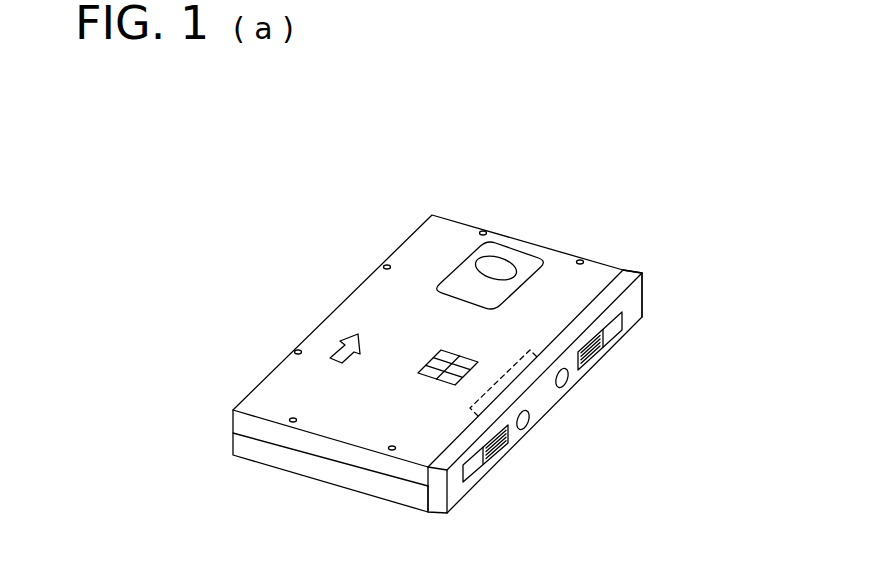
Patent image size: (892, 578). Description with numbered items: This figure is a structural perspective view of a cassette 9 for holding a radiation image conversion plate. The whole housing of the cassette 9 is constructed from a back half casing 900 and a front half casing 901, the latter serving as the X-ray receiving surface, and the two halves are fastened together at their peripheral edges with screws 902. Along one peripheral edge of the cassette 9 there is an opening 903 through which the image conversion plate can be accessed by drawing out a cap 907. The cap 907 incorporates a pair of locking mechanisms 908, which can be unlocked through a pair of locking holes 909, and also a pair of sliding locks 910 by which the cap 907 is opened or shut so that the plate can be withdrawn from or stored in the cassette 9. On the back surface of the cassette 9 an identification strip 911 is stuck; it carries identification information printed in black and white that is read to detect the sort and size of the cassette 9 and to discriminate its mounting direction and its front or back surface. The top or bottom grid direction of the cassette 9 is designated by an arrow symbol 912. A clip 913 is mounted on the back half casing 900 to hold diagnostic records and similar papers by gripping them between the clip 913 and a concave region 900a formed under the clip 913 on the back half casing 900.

The cassette 9 is at (248, 176).
The back half casing 900 is at (405, 257).
The concave region 900a is at (472, 262).
The front half casing 901 is at (292, 465).
The screws 902 is at (486, 233).
The opening 903 is at (621, 289).
The cap 907 is at (643, 271).
The locking mechanisms 908 is at (550, 360).
The locking holes 909 is at (568, 390).
The sliding locks 910 is at (605, 353).
The identification strip 911 is at (425, 380).
The arrow symbol 912 is at (336, 343).
The clip 913 is at (514, 266).